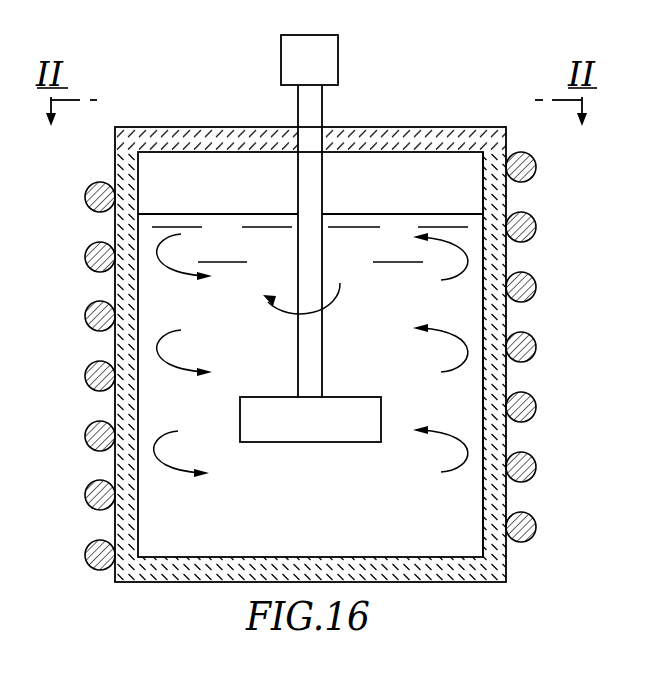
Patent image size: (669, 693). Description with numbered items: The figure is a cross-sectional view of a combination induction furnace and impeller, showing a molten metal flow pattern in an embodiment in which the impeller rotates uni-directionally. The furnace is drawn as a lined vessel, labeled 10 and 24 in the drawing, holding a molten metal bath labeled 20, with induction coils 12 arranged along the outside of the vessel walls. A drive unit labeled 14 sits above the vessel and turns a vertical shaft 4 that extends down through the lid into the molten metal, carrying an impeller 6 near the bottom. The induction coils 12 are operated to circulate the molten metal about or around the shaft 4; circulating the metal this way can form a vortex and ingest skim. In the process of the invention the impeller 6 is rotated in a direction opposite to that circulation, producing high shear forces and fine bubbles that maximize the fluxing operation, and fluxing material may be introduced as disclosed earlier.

The shaft 4 is at (312, 198).
The impeller 6 is at (327, 432).
The vessel body / crucible wall 10 is at (419, 128).
The induction coils 12 is at (535, 275).
The motor / drive unit 14 is at (338, 58).
The melt / liquid bath 20 is at (405, 550).
The inner wall surface 24 is at (470, 372).